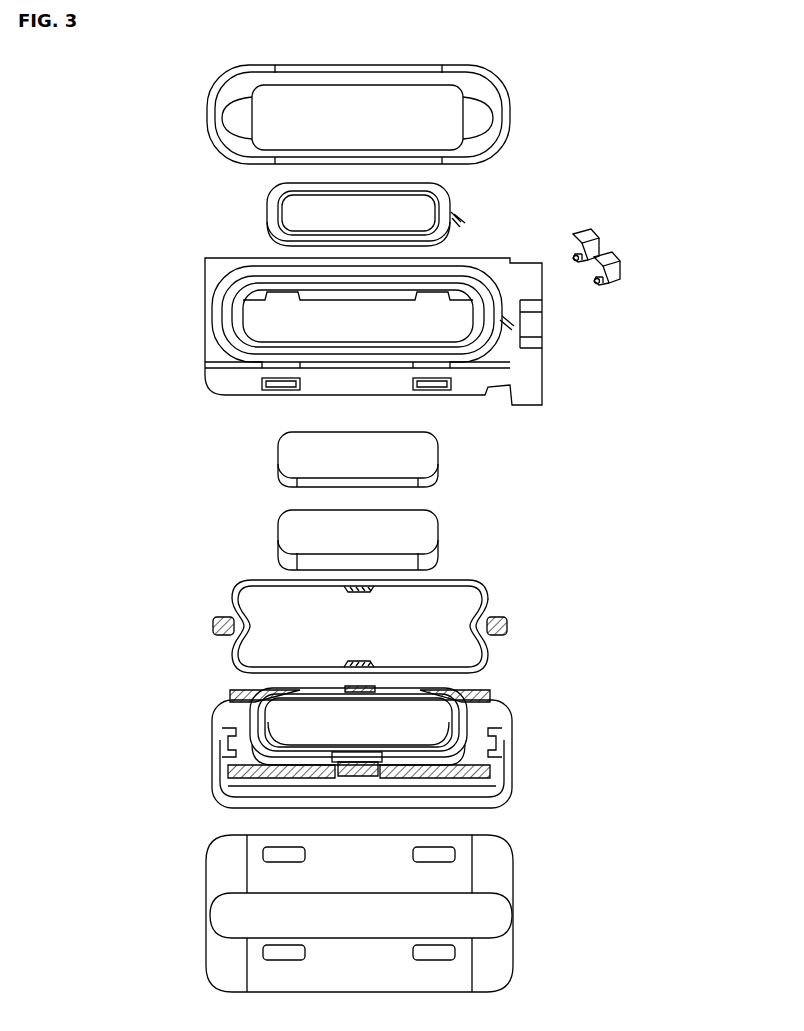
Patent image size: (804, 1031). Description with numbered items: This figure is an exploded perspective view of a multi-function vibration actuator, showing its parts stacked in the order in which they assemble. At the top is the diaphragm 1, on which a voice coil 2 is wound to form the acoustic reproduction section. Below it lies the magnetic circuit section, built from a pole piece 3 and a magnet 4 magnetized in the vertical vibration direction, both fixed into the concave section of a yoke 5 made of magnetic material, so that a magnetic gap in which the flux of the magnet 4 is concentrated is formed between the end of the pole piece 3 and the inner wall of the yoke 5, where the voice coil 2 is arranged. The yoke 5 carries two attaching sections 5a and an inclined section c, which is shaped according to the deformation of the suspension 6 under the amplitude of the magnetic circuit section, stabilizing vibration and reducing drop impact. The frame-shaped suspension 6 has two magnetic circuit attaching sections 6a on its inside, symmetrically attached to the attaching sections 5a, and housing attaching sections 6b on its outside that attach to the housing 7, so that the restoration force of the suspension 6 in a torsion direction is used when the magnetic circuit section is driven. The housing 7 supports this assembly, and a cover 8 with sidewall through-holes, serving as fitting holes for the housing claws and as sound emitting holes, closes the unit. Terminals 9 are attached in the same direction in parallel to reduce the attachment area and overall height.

The diaphragm 1 is at (483, 112).
The voice coil 2 is at (452, 205).
The pole piece 3 is at (410, 458).
The magnet 4 is at (411, 533).
The yoke 5 is at (443, 750).
The attaching sections 5a is at (227, 735).
The suspension 6 is at (443, 574).
The magnetic circuit attaching sections 6a is at (347, 592).
The housing attaching sections 6b is at (487, 617).
The housing 7 is at (525, 328).
The cover 8 is at (482, 918).
The terminals 9 is at (593, 233).
The inclined section c is at (337, 758).